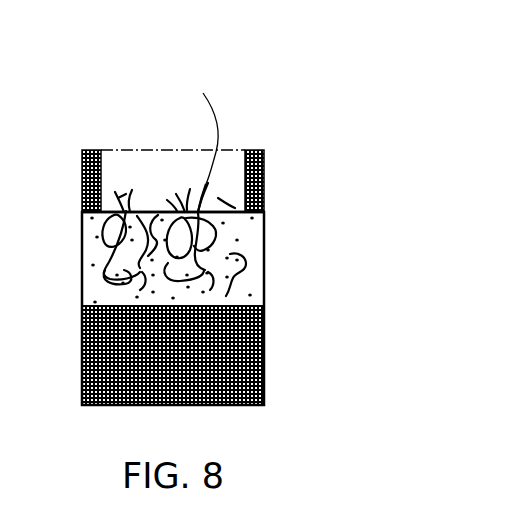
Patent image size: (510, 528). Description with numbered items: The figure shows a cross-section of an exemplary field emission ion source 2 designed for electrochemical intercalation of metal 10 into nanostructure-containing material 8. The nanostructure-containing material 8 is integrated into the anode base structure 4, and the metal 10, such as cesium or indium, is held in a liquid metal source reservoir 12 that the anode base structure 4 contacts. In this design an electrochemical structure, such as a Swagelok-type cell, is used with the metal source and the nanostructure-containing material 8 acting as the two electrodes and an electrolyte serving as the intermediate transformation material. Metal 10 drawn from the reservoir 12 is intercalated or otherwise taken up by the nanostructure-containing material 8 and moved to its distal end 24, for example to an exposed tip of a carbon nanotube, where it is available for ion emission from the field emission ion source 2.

The field emission ion source 2 is at (290, 167).
The anode base structure 4 is at (246, 232).
The nanostructure-containing material 8 is at (97, 249).
The liquid metal 10 is at (158, 198).
The liquid metal source reservoir 12 is at (263, 336).
The distal end 24 is at (199, 139).